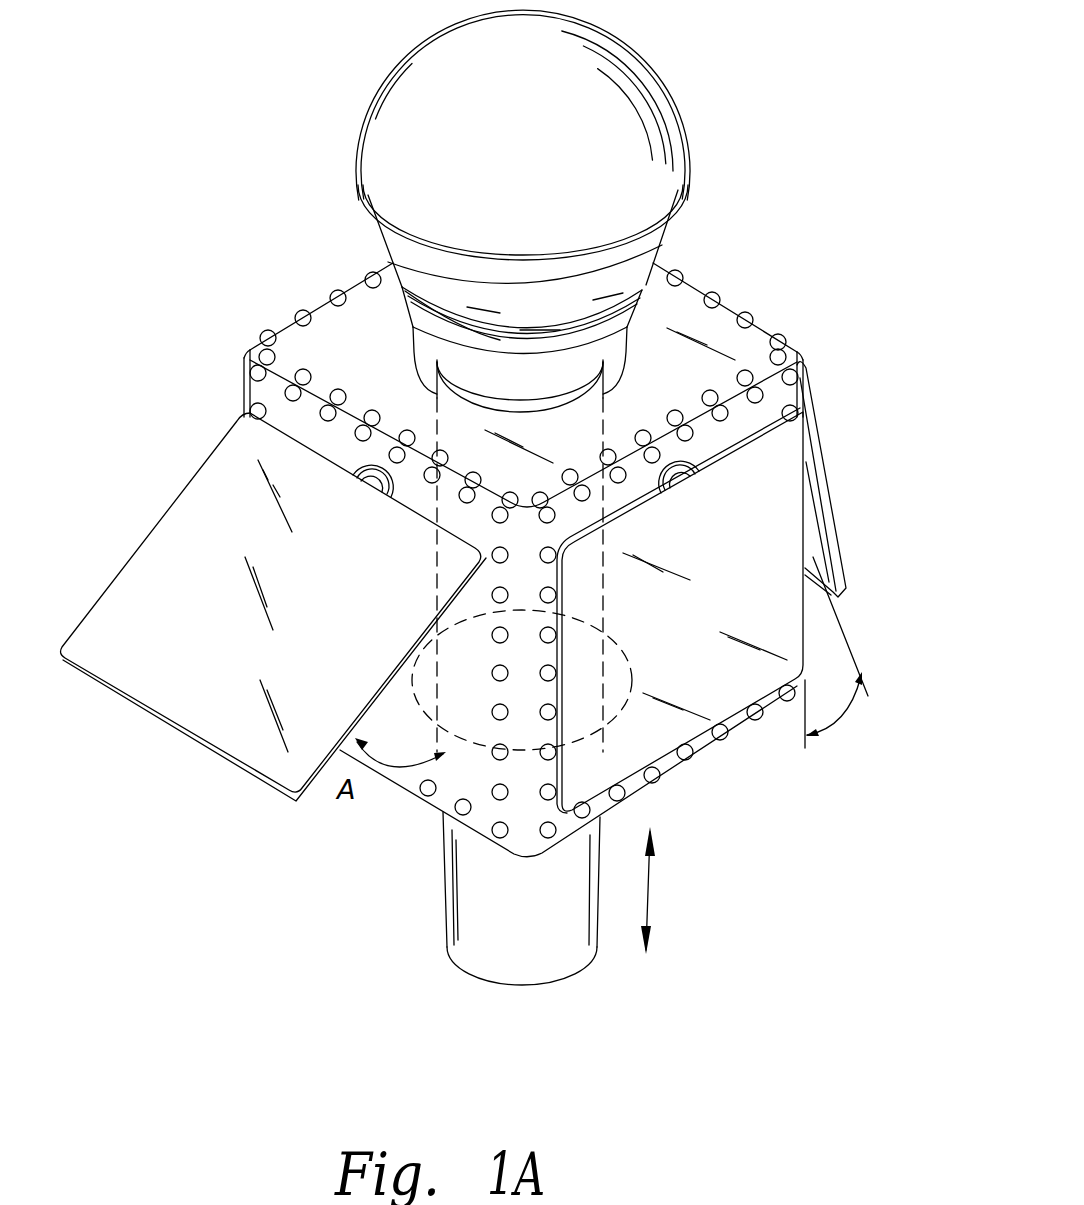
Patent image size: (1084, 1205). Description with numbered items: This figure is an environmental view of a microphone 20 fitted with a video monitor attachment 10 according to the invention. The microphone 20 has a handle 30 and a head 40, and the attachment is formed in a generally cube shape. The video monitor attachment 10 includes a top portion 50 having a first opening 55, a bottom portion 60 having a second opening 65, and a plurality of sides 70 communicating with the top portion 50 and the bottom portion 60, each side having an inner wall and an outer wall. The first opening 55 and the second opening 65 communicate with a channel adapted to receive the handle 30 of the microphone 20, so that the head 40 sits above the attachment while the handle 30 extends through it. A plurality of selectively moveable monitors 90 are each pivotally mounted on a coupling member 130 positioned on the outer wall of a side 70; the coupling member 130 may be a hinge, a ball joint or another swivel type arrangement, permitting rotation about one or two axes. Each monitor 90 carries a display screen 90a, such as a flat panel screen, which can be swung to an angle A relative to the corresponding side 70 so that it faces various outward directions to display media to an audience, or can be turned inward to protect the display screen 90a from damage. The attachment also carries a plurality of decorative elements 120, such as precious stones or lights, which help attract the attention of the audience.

The video monitor attachment 10 is at (214, 284).
The microphone 20 is at (733, 100).
The handle 30 is at (540, 946).
The head 40 is at (542, 165).
The top portion 50 is at (382, 363).
The first opening 55 is at (640, 338).
The bottom portion 60 is at (678, 800).
The second opening 65 is at (622, 668).
The sides 70 is at (268, 398).
The selectively moveable monitor 90 is at (186, 640).
The display screen 90a is at (807, 575).
The decorative elements 120 is at (339, 293).
The coupling member 130 is at (363, 478).